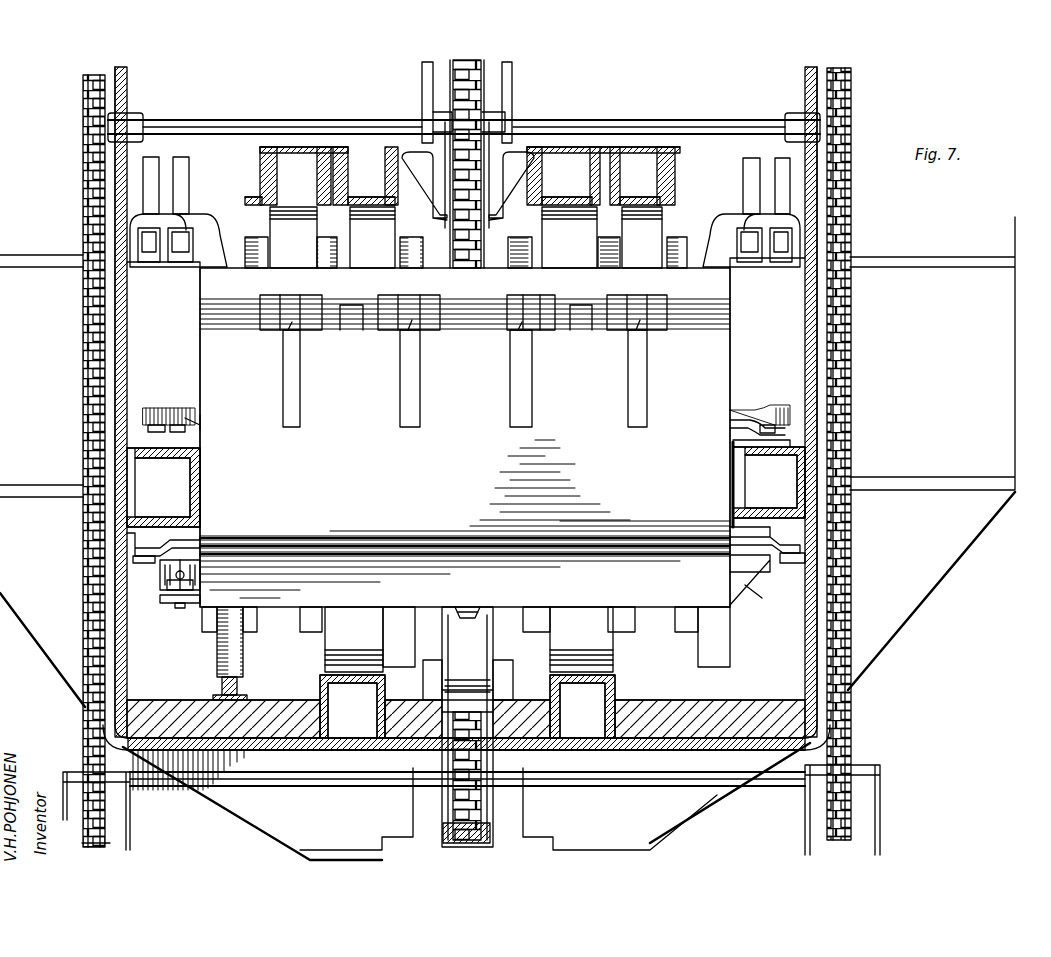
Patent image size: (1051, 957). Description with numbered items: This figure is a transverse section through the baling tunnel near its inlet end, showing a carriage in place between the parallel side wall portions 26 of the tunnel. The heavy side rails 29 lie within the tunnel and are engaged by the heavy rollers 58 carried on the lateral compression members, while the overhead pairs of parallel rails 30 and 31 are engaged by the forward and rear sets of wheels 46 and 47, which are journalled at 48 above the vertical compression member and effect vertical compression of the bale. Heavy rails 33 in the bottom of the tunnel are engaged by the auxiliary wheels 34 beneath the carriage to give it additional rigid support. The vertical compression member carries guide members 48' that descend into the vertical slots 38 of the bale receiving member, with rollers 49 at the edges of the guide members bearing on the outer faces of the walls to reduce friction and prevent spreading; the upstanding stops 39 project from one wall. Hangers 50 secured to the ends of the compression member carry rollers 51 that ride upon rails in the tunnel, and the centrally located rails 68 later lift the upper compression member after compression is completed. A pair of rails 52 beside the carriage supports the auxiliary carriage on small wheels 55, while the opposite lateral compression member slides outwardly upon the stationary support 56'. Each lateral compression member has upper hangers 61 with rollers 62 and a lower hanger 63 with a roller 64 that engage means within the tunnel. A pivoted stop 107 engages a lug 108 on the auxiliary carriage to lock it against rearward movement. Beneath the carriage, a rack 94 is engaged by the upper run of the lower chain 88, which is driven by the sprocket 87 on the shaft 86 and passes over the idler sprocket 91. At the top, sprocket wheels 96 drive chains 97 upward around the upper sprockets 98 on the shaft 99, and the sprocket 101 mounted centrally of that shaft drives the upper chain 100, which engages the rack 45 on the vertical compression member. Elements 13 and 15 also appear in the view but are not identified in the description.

The rail 13 is at (222, 686).
The wheel post 15 is at (217, 652).
The parallel side wall portions 26 is at (127, 355).
The side rails 29 is at (786, 450).
The overhead rails 30 is at (410, 190).
The overhead rails 31 is at (268, 186).
The bottom rails 33 is at (320, 680).
The auxiliary wheels 34 is at (515, 639).
The vertical slots 38 is at (300, 393).
The upstanding stops 39 is at (352, 332).
The rack 45 is at (460, 250).
The forward wheels 46 is at (473, 237).
The rear wheels 47 is at (466, 237).
The journals 48 is at (472, 238).
The guide members 48' is at (466, 327).
The rollers 49 is at (310, 325).
The hangers 50 is at (205, 225).
The rollers 51 is at (148, 265).
The rails 52 is at (160, 600).
The small wheels 55 is at (167, 588).
The stationary support 56' is at (756, 581).
The heavy rollers 58 is at (200, 505).
The upper hangers 61 is at (178, 408).
The rollers 62 is at (172, 432).
The lower hanger 63 is at (150, 563).
The roller 64 is at (148, 553).
The lifting rails 68 is at (175, 158).
The shaft 86 is at (648, 785).
The sprocket 87 is at (485, 800).
The lower chain 88 is at (461, 665).
The idler sprocket 91 is at (475, 655).
The rack 94 is at (475, 608).
The sprocket wheels 96 is at (850, 768).
The chains 97 is at (84, 126).
The upper sprockets 98 is at (88, 100).
The shaft 99 is at (668, 116).
The upper chain 100 is at (422, 84).
The sprocket 101 is at (512, 84).
The pivoted stop 107 is at (195, 575).
The lug 108 is at (182, 572).